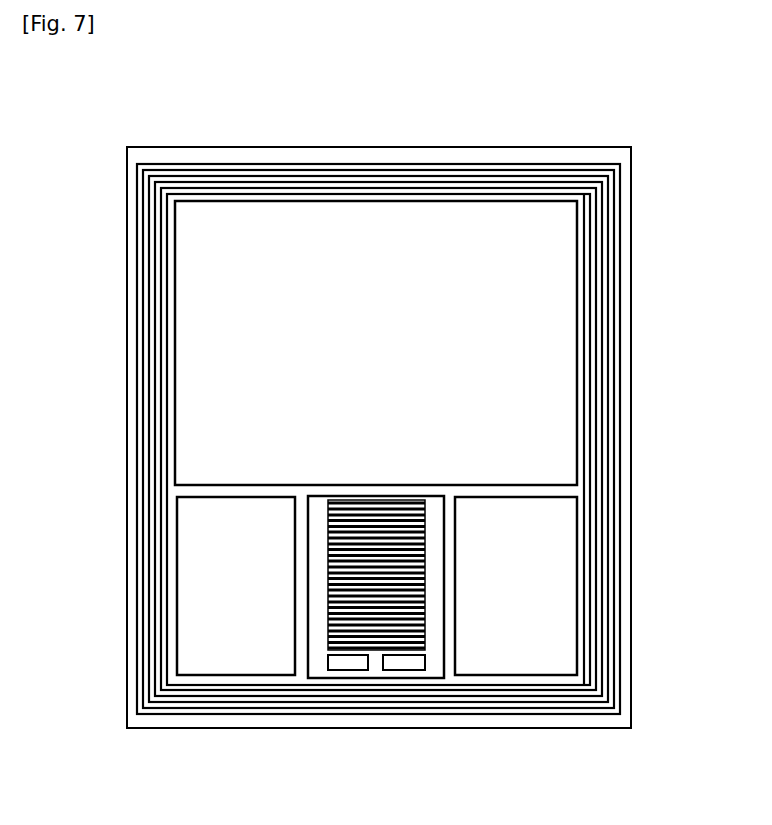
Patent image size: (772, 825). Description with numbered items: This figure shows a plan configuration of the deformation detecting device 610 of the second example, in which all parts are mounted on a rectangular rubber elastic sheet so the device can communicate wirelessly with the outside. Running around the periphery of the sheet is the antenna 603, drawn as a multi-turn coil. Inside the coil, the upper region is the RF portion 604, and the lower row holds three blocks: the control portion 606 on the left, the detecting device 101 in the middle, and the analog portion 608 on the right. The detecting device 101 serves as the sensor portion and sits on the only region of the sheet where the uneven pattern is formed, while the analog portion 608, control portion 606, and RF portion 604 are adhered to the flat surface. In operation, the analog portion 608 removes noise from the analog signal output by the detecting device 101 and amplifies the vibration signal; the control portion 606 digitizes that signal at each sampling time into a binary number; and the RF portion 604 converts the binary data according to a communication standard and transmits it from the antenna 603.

The deformation detecting device 610 is at (382, 147).
The antenna 603 is at (605, 395).
The RF portion 604 is at (207, 376).
The control portion 606 is at (207, 568).
The analog portion 608 is at (510, 635).
The detecting device 101 is at (380, 633).